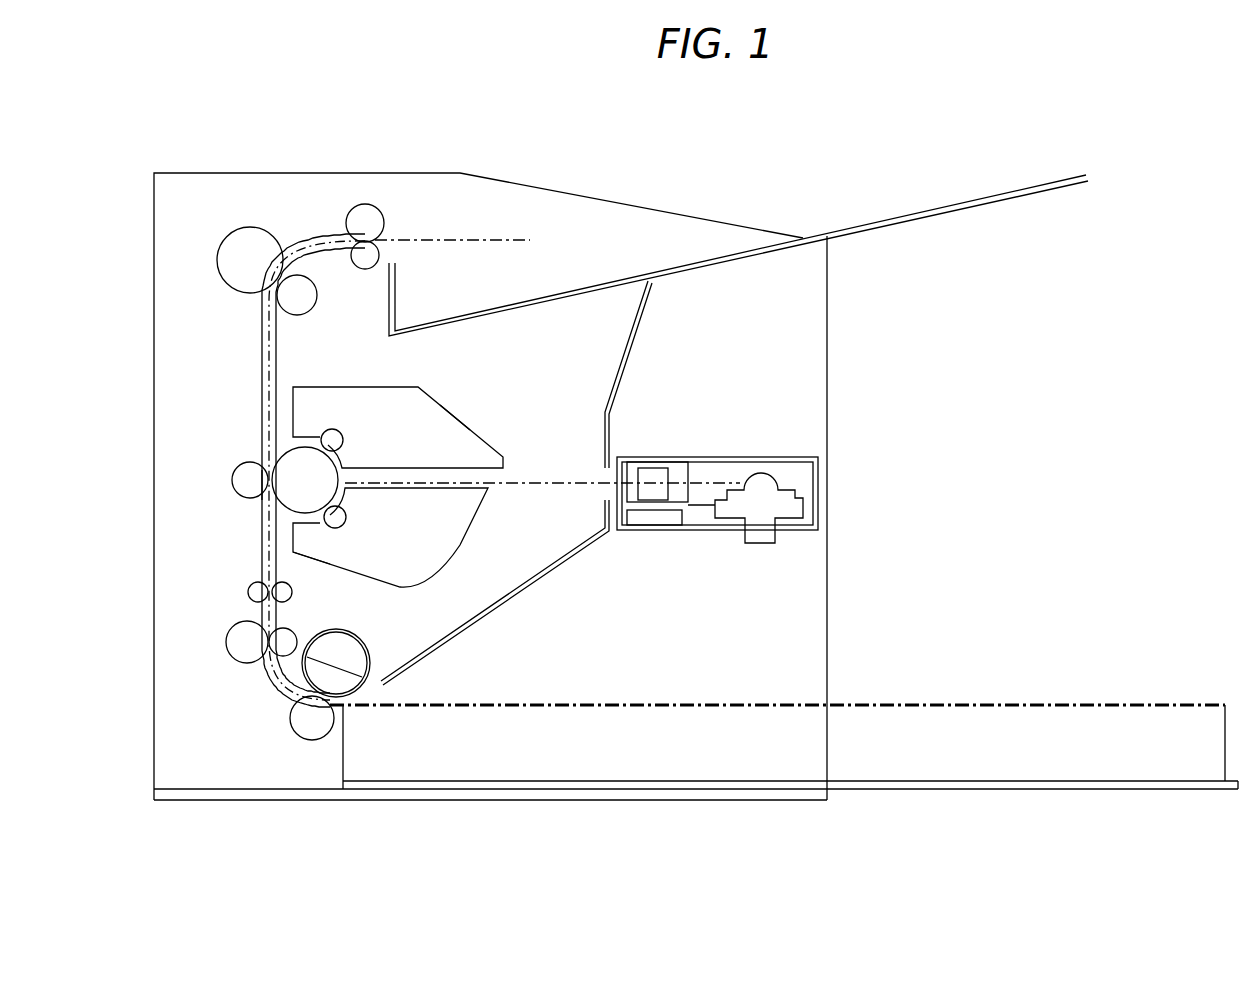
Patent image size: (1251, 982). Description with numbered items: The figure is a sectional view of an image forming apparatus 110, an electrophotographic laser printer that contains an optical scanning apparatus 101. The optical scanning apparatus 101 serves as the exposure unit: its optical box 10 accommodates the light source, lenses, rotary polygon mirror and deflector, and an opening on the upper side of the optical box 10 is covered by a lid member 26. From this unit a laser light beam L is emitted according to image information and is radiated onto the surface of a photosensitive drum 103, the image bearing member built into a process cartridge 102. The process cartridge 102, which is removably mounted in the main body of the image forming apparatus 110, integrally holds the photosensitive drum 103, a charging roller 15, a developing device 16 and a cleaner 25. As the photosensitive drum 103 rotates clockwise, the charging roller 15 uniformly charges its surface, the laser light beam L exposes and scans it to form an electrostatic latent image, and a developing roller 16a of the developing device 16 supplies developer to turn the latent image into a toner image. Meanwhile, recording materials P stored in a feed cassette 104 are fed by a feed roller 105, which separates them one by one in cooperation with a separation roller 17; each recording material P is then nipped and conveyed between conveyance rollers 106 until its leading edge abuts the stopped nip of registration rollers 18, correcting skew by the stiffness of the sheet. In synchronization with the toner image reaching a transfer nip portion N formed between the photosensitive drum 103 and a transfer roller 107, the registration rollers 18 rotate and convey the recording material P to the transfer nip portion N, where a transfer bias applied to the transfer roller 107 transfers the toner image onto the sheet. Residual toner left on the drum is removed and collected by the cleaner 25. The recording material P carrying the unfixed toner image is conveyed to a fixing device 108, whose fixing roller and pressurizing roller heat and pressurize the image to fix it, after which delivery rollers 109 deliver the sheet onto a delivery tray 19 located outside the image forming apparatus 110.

The image forming apparatus 110 is at (199, 165).
The fixing device 108 is at (248, 235).
The delivery rollers 109 is at (365, 212).
The delivery tray 19 is at (670, 262).
The charging roller 15 is at (370, 481).
The photosensitive drum 103 is at (290, 460).
The process cartridge 102 is at (440, 396).
The cleaner 25 is at (467, 423).
The laser light beam L is at (556, 483).
The lid member 26 is at (716, 456).
The optical scanning apparatus 101 is at (796, 452).
The optical box 10 is at (820, 484).
The transfer roller 107 is at (240, 478).
The transfer nip portion N is at (262, 512).
The registration rollers 18 is at (250, 592).
The developing roller 16a is at (316, 555).
The feed roller 105 is at (342, 651).
The developing device 16 is at (478, 548).
The conveyance rollers 106 is at (248, 652).
The separation roller 17 is at (312, 740).
The recording material P is at (988, 703).
The feed cassette 104 is at (887, 790).